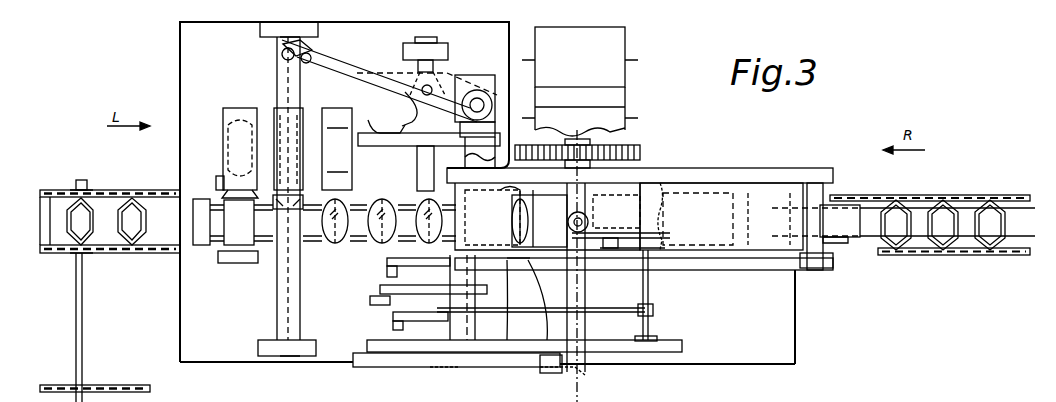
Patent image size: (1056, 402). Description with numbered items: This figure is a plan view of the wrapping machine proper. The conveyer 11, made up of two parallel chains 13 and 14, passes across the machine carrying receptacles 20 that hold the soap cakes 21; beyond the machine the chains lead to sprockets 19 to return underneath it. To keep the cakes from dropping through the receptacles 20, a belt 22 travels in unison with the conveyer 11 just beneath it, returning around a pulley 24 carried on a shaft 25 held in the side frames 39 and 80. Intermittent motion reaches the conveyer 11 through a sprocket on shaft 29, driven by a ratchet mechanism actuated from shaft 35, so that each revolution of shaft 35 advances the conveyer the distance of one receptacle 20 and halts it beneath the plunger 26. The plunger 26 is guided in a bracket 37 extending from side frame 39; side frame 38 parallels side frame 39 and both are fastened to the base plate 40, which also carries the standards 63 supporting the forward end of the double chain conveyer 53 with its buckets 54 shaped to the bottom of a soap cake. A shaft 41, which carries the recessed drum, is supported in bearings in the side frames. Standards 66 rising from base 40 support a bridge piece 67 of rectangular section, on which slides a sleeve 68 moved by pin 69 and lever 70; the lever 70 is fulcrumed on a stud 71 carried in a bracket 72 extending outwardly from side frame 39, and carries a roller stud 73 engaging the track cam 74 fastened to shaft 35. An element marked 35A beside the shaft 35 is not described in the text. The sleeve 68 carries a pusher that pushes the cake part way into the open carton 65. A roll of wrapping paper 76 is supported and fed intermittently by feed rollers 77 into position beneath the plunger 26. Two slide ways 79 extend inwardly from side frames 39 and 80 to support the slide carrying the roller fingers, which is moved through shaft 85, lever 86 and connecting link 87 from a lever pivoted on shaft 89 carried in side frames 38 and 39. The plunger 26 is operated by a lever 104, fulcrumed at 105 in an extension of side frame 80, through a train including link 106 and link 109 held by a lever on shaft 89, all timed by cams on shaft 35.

The conveyer 11 is at (108, 190).
The chain 13 is at (1012, 196).
The chain 14 is at (1016, 255).
The sprockets 19 is at (76, 188).
The receptacles 20 is at (990, 250).
The cakes 21 is at (330, 243).
The belt 22 is at (1018, 222).
The pulley 24 is at (842, 242).
The shaft 25 is at (822, 192).
The plunger 26 is at (588, 220).
The shaft 29 is at (76, 352).
The shaft 35 is at (418, 163).
The adjusting block 35A is at (425, 43).
The bracket 37 is at (590, 195).
The side frame 38 is at (682, 346).
The side frame 39 is at (760, 177).
The base plate 40 is at (796, 322).
The shaft 41 is at (582, 281).
The double chain conveyer 53 is at (364, 243).
The buckets 54 is at (347, 245).
The standards 63 is at (217, 182).
The open carton 65 is at (342, 116).
The standards 66 is at (266, 30).
The bridge piece 67 is at (280, 320).
The sleeve 68 is at (276, 90).
The pin 69 is at (302, 47).
The lever 70 is at (360, 62).
The stud 71 is at (480, 100).
The bracket 72 is at (482, 165).
The roller stud 73 is at (432, 86).
The track cam 74 is at (374, 146).
The roll of wrapping paper 76 is at (610, 53).
The feed rollers 77 is at (612, 113).
The slide ways 79 is at (745, 205).
The side frame 80 is at (740, 270).
The shaft 85 is at (650, 292).
The lever 86 is at (654, 314).
The connecting link 87 is at (595, 310).
The shaft 89 is at (465, 335).
The lever 104 is at (630, 245).
The fulcrum 105 is at (672, 222).
The link 106 is at (600, 378).
The link 109 is at (456, 384).